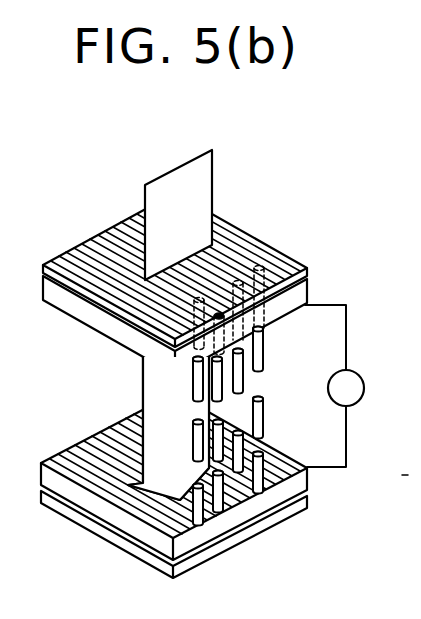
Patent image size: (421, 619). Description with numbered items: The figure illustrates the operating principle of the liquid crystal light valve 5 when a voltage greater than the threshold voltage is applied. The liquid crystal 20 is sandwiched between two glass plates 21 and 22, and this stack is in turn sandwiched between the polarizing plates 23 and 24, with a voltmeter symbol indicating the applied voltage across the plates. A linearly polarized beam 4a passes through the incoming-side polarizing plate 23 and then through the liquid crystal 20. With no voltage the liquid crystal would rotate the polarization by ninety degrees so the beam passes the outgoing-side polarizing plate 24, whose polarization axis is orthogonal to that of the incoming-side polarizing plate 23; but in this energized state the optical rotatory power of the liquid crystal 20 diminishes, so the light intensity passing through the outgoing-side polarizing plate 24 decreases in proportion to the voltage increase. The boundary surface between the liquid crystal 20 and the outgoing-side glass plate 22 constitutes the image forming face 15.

The liquid crystal light valve 5 is at (114, 158).
The linearly polarized beam 4a is at (213, 185).
The polarizing plate 23 is at (297, 257).
The glass plate 21 is at (90, 328).
The liquid crystal 20 is at (263, 347).
The glass plate 22 is at (77, 446).
The image forming face 15 is at (277, 457).
The polarizing plate 24 is at (97, 533).